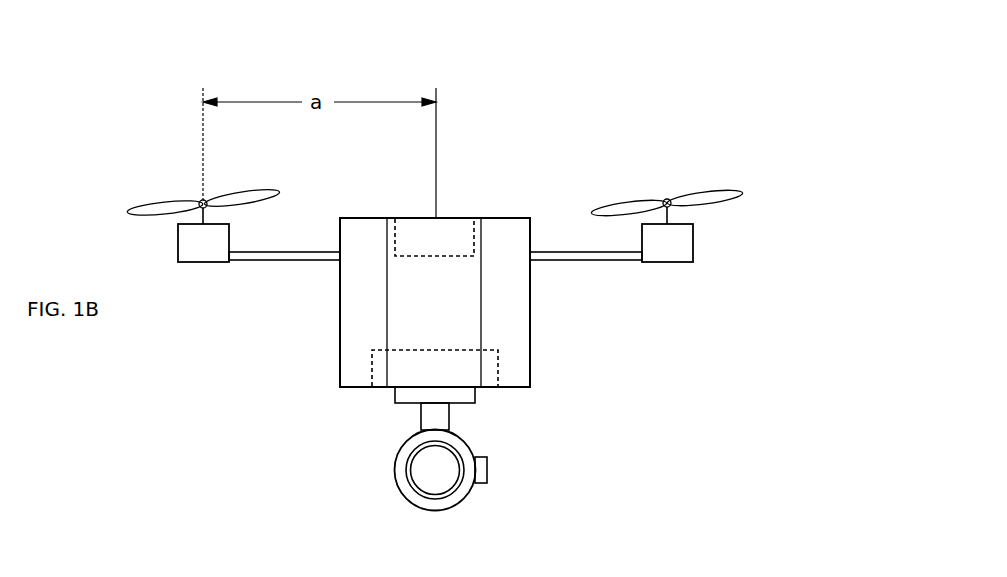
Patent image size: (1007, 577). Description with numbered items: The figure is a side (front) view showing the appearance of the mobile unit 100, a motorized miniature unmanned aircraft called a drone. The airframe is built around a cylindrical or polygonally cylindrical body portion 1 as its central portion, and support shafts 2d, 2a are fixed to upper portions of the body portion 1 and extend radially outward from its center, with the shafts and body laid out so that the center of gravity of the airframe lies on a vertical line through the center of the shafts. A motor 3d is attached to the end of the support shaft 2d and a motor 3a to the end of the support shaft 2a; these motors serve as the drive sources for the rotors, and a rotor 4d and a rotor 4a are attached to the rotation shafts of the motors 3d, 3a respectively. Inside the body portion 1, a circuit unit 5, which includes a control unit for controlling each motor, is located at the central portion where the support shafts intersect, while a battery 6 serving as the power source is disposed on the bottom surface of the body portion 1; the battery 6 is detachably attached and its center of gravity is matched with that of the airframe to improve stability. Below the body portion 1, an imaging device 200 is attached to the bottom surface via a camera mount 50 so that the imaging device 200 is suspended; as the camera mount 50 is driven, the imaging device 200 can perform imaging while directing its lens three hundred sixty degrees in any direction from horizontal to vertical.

The mobile unit 100 is at (573, 120).
The body portion 1 is at (530, 335).
The circuit unit 5 is at (474, 239).
The battery 6 is at (498, 366).
The support shaft 2d is at (315, 252).
The support shaft 2a is at (554, 252).
The motor 3d is at (178, 252).
The motor 3a is at (693, 251).
The rotor 4d is at (140, 207).
The rotor 4a is at (608, 207).
The camera mount 50 is at (450, 413).
The imaging device 200 is at (394, 468).